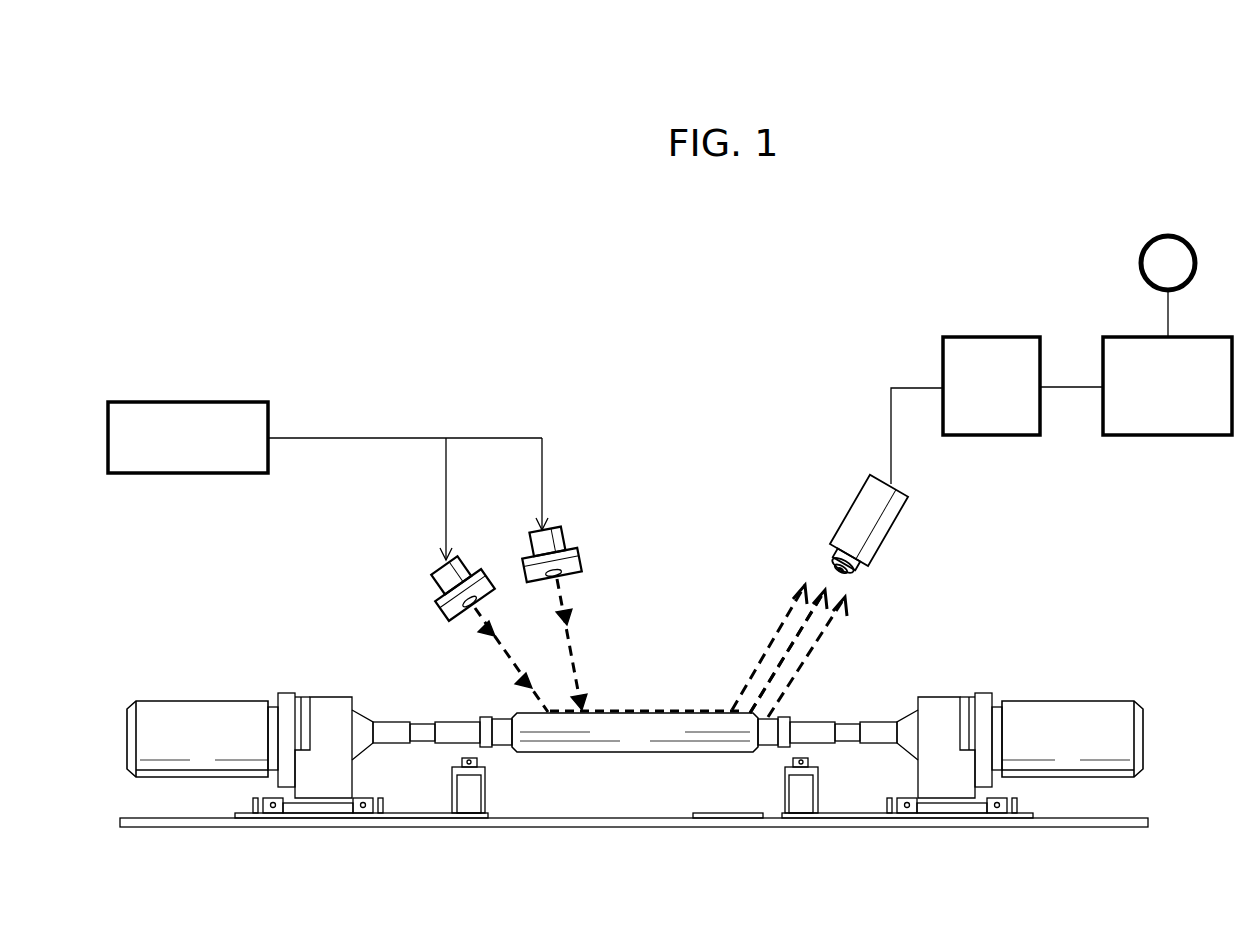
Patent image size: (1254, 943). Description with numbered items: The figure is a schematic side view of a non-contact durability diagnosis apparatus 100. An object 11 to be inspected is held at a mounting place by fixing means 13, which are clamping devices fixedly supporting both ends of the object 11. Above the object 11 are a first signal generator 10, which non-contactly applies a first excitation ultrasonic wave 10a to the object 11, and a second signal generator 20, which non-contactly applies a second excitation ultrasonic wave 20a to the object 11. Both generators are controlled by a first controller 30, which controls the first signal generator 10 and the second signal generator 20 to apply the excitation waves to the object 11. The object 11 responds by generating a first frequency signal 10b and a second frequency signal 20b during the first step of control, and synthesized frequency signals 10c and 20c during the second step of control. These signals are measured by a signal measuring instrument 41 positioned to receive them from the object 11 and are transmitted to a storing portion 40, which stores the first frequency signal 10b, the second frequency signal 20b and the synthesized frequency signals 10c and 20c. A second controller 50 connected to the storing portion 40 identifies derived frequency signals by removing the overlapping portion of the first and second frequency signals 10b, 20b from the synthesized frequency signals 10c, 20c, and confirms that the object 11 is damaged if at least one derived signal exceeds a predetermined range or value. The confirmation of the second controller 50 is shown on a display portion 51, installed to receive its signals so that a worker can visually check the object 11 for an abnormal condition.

The non-contact durability diagnosis apparatus 100 is at (818, 283).
The first signal generator 10 is at (392, 582).
The first excitation ultrasonic wave 10a is at (508, 651).
The first frequency signal 10b is at (778, 668).
The synthesized frequency signal 10c is at (815, 645).
The second signal generator 20 is at (578, 510).
The second excitation ultrasonic wave 20a is at (573, 639).
The second frequency signal 20b is at (774, 640).
The synthesized frequency signal 20c is at (787, 651).
The object 11 is at (681, 725).
The fixing means 13 is at (197, 722).
The first controller 30 is at (200, 402).
The storing portion 40 is at (988, 437).
The signal measuring instrument 41 is at (887, 522).
The second controller 50 is at (1168, 437).
The display portion 51 is at (1198, 262).